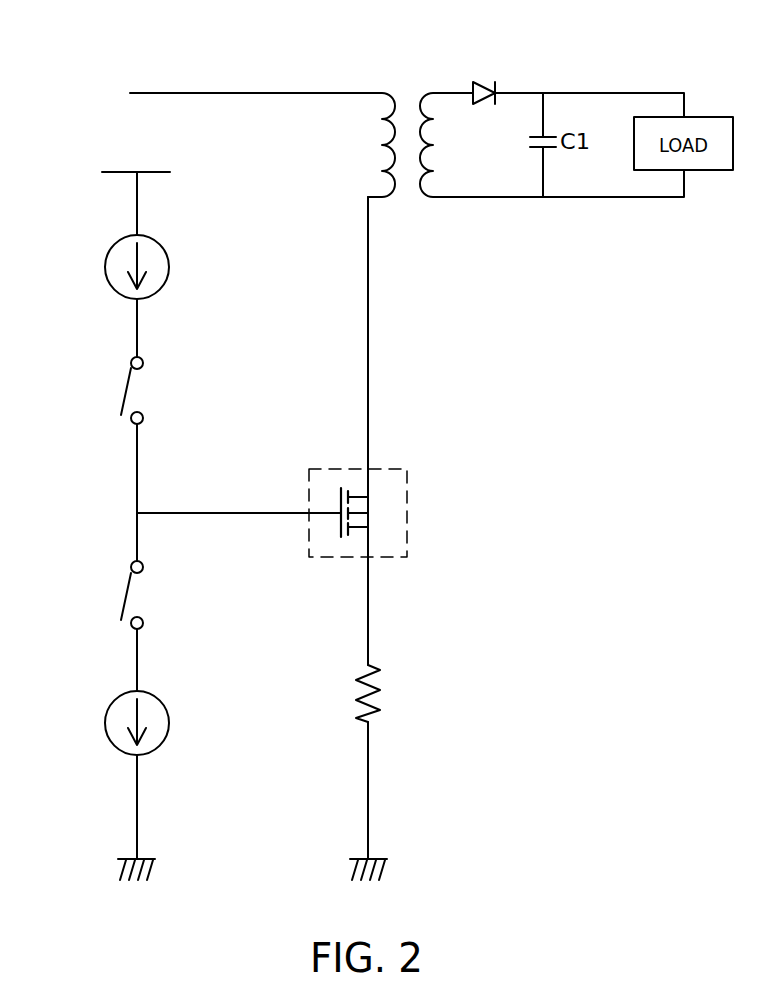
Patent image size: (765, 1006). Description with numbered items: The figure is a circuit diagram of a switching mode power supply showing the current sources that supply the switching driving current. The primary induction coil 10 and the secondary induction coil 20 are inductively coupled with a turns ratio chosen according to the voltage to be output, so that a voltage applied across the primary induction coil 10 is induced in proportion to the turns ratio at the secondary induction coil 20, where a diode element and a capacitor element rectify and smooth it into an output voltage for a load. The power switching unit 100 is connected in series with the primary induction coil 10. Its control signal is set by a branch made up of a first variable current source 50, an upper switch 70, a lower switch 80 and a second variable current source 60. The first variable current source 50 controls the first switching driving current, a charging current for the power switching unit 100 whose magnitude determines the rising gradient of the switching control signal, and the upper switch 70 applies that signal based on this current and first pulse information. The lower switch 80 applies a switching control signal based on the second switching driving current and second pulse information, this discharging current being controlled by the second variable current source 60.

The primary induction coil 10 is at (372, 92).
The secondary induction coil 20 is at (452, 92).
The first variable current source 50 is at (110, 267).
The second variable current source 60 is at (113, 718).
The upper switch 70 is at (121, 383).
The lower switch 80 is at (121, 589).
The power switching unit 100 is at (395, 470).